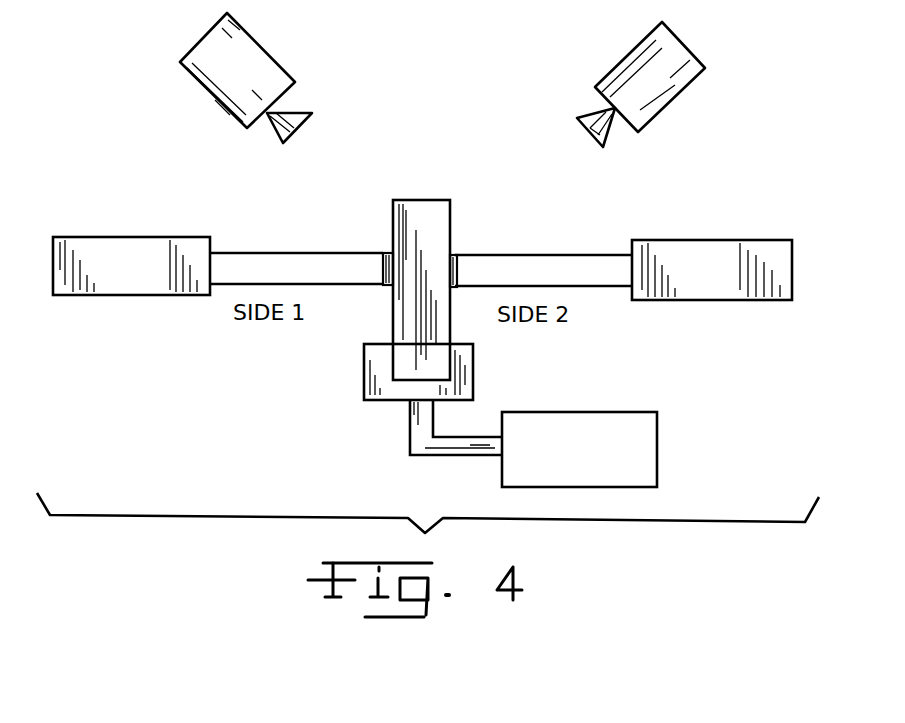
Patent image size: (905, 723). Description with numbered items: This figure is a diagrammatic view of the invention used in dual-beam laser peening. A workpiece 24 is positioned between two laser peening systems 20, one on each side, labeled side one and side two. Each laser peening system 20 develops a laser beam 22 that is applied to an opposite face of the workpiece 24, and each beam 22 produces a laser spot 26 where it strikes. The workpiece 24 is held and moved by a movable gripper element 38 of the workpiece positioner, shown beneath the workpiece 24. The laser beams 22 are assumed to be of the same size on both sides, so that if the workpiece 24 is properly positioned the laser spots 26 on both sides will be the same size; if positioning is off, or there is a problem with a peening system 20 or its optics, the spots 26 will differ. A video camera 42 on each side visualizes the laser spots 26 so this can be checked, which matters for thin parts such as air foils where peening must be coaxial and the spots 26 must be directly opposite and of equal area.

The laser peening system 20 is at (113, 308).
The laser beam 22 is at (255, 251).
The workpiece 24 is at (433, 200).
The laser spot 26 is at (383, 265).
The gripper element 38 is at (655, 448).
The video camera 42 is at (208, 95).